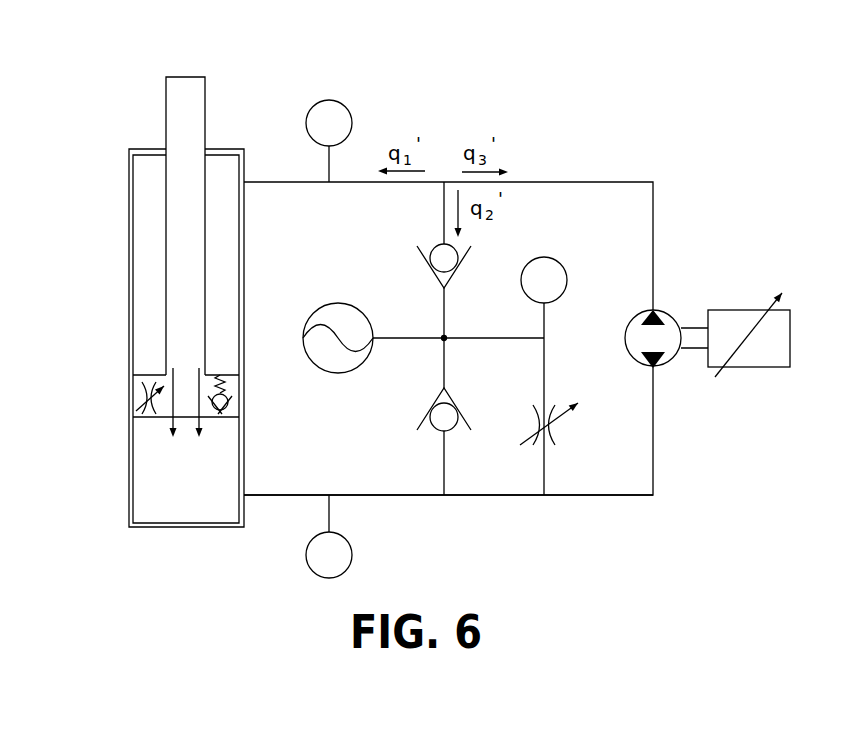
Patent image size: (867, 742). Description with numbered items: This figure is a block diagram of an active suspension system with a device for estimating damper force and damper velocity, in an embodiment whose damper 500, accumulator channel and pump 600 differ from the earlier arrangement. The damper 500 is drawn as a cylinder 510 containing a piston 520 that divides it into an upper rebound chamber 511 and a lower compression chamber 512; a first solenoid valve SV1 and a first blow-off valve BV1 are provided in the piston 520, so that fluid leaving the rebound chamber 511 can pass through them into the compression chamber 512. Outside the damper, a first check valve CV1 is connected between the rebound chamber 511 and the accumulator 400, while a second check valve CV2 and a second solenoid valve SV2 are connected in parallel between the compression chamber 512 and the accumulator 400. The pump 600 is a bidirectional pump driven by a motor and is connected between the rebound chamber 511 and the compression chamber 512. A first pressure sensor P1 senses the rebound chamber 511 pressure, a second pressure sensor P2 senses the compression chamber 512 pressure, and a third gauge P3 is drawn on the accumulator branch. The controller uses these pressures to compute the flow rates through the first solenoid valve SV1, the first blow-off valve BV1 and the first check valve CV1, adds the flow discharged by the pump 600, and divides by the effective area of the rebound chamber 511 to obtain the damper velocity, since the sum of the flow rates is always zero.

The damper 500 is at (120, 126).
The cylinder 510 is at (127, 203).
The rebound chamber 511 is at (143, 305).
The compression chamber 512 is at (186, 498).
The piston 520 is at (186, 85).
The accumulator 400 is at (336, 300).
The pump 600 is at (670, 311).
The first pressure sensor P1 is at (329, 141).
The second pressure sensor P2 is at (329, 536).
The third pressure gauge P3 is at (544, 376).
The first check valve CV1 is at (455, 272).
The second check valve CV2 is at (455, 406).
The first solenoid valve SV1 is at (137, 400).
The second solenoid valve SV2 is at (553, 437).
The first blow-off valve BV1 is at (234, 405).